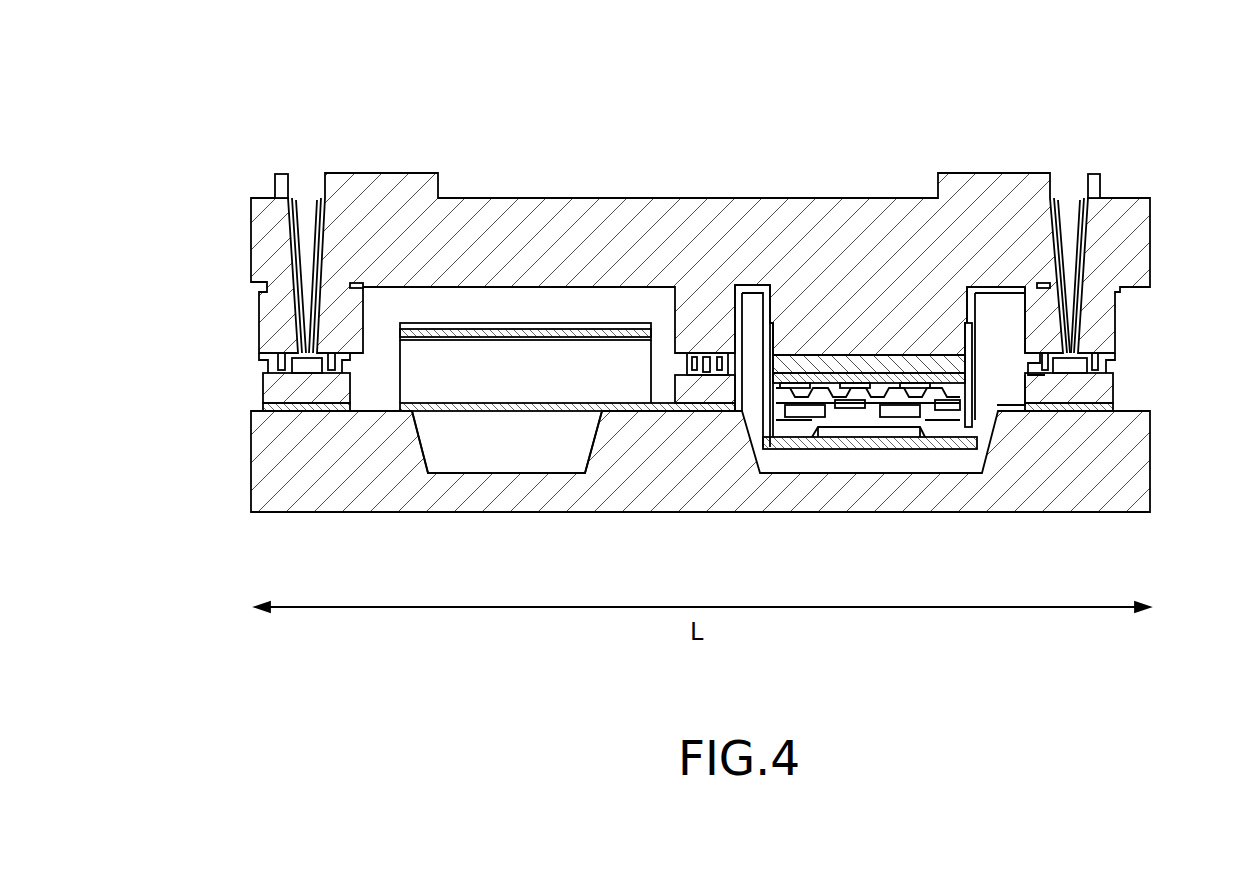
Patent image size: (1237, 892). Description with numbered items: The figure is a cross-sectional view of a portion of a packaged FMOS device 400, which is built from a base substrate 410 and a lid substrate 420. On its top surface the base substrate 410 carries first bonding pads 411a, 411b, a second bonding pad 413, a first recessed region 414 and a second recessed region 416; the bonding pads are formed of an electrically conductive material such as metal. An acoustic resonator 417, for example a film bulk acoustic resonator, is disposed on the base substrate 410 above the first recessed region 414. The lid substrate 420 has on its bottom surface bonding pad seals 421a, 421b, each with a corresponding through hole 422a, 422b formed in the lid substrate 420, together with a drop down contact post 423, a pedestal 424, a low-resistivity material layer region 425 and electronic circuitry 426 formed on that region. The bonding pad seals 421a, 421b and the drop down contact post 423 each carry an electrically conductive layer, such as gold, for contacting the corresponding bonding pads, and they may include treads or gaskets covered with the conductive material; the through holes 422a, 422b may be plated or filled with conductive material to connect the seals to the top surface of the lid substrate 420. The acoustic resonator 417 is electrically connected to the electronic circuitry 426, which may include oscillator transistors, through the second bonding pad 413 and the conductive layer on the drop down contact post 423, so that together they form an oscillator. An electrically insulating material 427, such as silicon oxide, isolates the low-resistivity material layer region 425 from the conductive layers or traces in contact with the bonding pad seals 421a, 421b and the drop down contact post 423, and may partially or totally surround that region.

The packaged FMOS device 400 is at (996, 74).
The base substrate 410 is at (713, 502).
The first bonding pad 411a is at (300, 410).
The first bonding pad 411b is at (1087, 412).
The second bonding pad 413 is at (682, 412).
The first recessed region 414 is at (512, 453).
The second recessed region 416 is at (855, 440).
The acoustic resonator 417 is at (453, 422).
The lid substrate 420 is at (613, 198).
The bonding pad seal 421a is at (250, 357).
The bonding pad seal 421b is at (1122, 357).
The through hole 422a is at (307, 200).
The through hole 422b is at (1070, 198).
The drop down contact post 423 is at (698, 312).
The pedestal 424 is at (807, 318).
The low-resistivity material layer region 425 is at (885, 355).
The electronic circuitry 426 is at (903, 443).
The electrically insulating material 427 is at (772, 325).